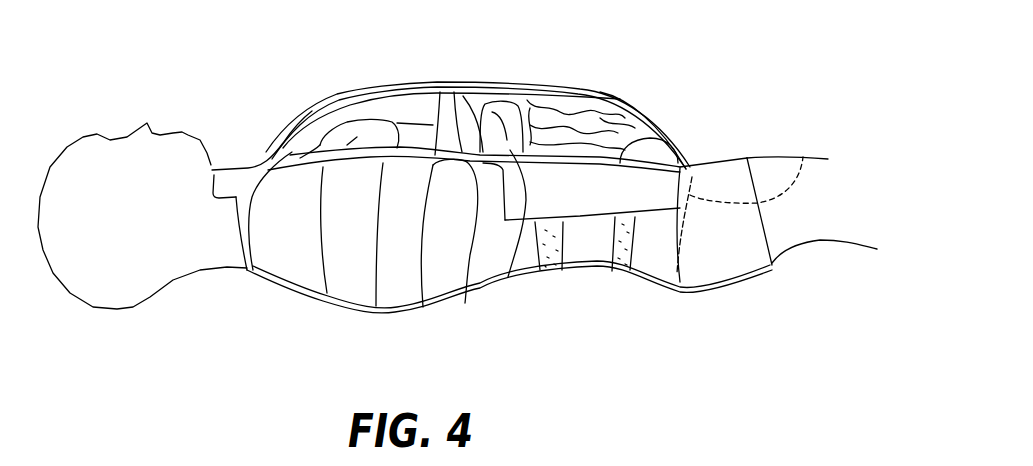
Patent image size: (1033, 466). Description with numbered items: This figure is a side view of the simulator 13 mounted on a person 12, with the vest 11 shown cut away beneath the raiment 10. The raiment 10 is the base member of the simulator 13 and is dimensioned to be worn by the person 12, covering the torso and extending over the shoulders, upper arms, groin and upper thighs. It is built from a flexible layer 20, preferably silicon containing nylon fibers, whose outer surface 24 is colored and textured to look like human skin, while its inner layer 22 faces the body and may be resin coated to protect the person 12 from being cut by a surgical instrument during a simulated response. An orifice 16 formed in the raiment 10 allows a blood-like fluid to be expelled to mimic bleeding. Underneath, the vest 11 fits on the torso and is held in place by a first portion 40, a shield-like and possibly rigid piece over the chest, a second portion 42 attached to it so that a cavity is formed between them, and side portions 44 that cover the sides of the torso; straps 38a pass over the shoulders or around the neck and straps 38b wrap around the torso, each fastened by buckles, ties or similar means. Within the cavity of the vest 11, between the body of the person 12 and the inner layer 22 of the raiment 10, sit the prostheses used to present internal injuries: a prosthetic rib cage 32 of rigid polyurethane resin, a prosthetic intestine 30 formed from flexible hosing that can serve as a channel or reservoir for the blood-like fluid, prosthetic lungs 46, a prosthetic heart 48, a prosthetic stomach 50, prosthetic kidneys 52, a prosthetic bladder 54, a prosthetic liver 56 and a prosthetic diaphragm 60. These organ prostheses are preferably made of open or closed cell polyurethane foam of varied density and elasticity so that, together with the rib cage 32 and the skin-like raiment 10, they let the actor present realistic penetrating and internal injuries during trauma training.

The raiment 10 is at (680, 124).
The vest 11 is at (683, 162).
The person 12 is at (83, 137).
The simulator 13 is at (276, 292).
The orifice 16 is at (310, 107).
The layer 20 is at (277, 147).
The inner layer 22 is at (338, 92).
The outer surface 24 is at (370, 98).
The prosthetic intestine 30 is at (590, 88).
The prosthetic rib cage 32 is at (465, 303).
The straps 38a is at (240, 212).
The straps 38b is at (547, 277).
The first portion 40 is at (376, 306).
The second portion 42 is at (423, 307).
The side portions 44 is at (801, 157).
The prosthetic lungs 46 is at (407, 108).
The prosthetic heart 48 is at (327, 293).
The prosthetic stomach 50 is at (530, 88).
The prosthetic kidneys 52 is at (508, 277).
The prosthetic bladder 54 is at (643, 140).
The prosthetic liver 56 is at (497, 100).
The prosthetic diaphragm 60 is at (440, 92).